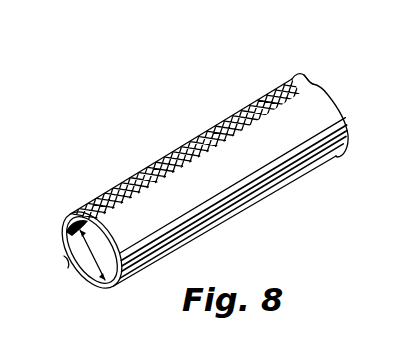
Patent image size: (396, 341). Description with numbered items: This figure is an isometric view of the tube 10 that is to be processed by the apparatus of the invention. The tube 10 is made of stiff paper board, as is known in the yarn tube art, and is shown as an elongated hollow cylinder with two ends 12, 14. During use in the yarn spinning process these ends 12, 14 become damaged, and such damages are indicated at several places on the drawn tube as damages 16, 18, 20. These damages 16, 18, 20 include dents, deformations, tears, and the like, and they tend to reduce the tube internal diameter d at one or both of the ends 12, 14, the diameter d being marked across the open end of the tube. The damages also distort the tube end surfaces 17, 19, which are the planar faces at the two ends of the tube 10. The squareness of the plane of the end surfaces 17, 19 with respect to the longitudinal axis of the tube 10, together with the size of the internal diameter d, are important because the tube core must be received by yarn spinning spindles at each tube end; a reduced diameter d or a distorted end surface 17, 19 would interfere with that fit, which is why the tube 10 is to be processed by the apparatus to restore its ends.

The tube 10 is at (202, 183).
The end 12 is at (98, 211).
The end 14 is at (284, 85).
The damage 16 is at (314, 84).
The end surface 17 is at (66, 224).
The damage 18 is at (130, 270).
The end surface 19 is at (347, 146).
The damage 20 is at (68, 260).
The tube internal diameter d is at (106, 233).